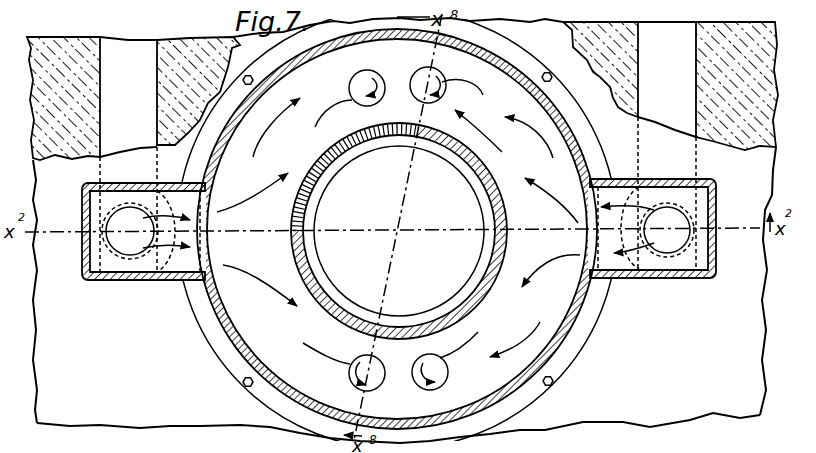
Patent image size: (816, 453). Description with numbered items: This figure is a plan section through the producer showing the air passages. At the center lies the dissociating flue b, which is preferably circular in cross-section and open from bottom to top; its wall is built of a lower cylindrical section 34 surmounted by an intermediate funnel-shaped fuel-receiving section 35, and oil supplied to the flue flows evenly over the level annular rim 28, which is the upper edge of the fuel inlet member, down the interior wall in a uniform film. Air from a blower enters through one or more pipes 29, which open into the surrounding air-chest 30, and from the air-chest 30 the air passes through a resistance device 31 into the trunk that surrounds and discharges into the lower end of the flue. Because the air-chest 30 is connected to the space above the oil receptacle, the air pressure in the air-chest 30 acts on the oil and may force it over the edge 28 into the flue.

The level annular rim 28 is at (143, 213).
The pipe 29 is at (653, 197).
The air-chest 30 is at (398, 227).
The resistance device 31 is at (414, 78).
The lower cylindrical section 34 is at (317, 218).
The intermediate funnel-shaped fuel-receiving section 35 is at (483, 198).
The dissociating flue b is at (399, 231).